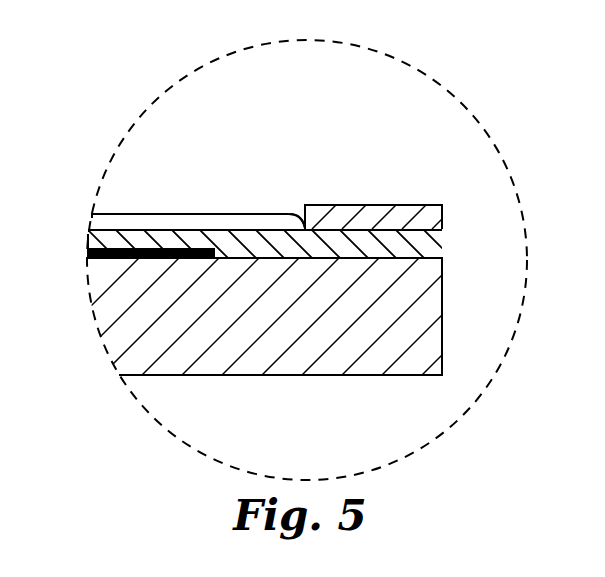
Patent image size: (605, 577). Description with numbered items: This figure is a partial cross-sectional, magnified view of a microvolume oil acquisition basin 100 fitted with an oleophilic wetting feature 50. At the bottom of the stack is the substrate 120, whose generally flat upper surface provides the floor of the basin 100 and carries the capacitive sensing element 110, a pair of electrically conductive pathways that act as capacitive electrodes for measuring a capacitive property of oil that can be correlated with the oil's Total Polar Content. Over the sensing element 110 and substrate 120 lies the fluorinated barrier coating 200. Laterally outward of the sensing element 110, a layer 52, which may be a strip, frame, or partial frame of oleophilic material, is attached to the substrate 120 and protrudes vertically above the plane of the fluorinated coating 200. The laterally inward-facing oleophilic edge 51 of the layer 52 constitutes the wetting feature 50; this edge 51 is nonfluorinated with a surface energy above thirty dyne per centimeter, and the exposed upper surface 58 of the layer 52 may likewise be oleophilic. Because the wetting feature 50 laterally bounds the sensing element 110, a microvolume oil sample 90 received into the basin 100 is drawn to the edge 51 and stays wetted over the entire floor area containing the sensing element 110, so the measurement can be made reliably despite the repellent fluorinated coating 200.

The oleophilic wetting feature 50 is at (301, 219).
The oleophilic edge 51 is at (300, 218).
The layer 52 is at (370, 214).
The upper surface 58 is at (430, 205).
The microvolume oil sample 90 is at (107, 213).
The microvolume oil acquisition basin 100 is at (128, 221).
The capacitive sensing element 110 is at (177, 250).
The substrate 120 is at (284, 362).
The fluorinated barrier coating 200 is at (253, 236).